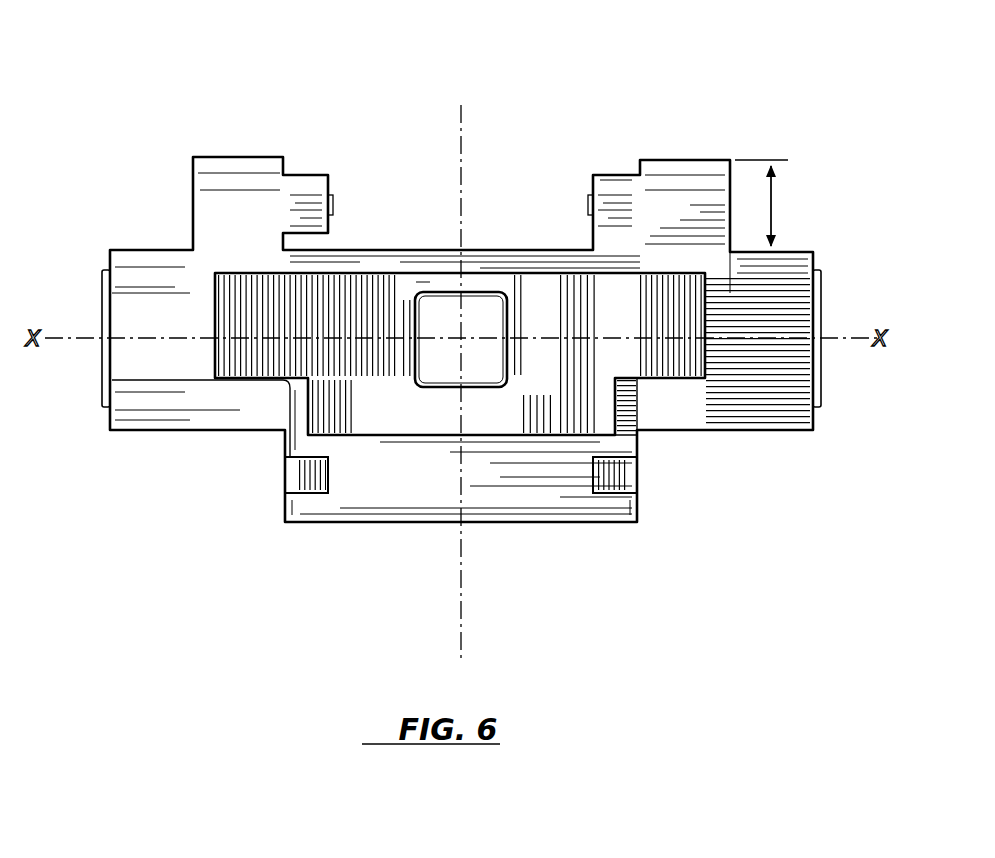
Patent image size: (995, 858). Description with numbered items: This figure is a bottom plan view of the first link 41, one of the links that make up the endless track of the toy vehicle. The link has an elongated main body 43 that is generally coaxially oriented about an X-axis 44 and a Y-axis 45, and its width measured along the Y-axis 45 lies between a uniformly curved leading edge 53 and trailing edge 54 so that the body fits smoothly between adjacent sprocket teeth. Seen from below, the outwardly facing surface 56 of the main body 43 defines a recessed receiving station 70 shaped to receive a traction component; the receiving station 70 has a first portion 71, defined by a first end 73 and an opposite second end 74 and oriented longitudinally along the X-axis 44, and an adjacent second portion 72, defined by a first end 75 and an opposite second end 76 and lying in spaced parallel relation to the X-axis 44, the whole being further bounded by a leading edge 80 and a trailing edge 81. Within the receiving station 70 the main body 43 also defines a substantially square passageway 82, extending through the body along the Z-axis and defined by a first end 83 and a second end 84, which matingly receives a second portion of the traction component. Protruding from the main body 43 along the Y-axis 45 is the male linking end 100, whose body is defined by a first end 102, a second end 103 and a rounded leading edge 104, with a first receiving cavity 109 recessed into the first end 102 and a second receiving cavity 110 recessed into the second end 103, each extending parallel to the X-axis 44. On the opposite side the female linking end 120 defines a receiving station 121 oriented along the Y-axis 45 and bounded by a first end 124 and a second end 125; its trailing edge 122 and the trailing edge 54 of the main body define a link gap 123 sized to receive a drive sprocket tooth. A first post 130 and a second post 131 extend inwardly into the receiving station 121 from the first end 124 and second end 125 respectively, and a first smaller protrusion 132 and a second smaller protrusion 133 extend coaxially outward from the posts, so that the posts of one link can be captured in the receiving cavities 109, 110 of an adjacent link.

The first link 41 is at (280, 625).
The main body 43 is at (782, 297).
The X-axis 44 is at (75, 337).
The Y-axis 45 is at (463, 178).
The leading edge 53 is at (200, 432).
The trailing edge 54 is at (150, 247).
The outwardly facing surface 56 is at (757, 365).
The receiving station 70 is at (400, 305).
The first portion 71 is at (608, 330).
The second portion 72 is at (494, 422).
The first end 73 is at (215, 300).
The second end 74 is at (705, 348).
The first end 75 is at (308, 400).
The second end 76 is at (613, 412).
The leading edge 80 is at (380, 432).
The trailing edge 81 is at (420, 277).
The passageway 82 is at (490, 318).
The first end 83 is at (415, 360).
The second end 84 is at (507, 347).
The male linking end 100 is at (382, 497).
The first end 102 is at (290, 522).
The second end 103 is at (630, 525).
The leading edge 104 is at (428, 522).
The first receiving cavity 109 is at (285, 478).
The second receiving cavity 110 is at (637, 478).
The female linking end 120 is at (437, 140).
The receiving station 121 is at (533, 185).
The trailing edge 122 is at (685, 160).
The link gap 123 is at (772, 205).
The first end 124 is at (287, 154).
The second end 125 is at (633, 170).
The first post 130 is at (320, 176).
The second post 131 is at (605, 172).
The first smaller protrusion 132 is at (338, 195).
The second smaller protrusion 133 is at (590, 198).